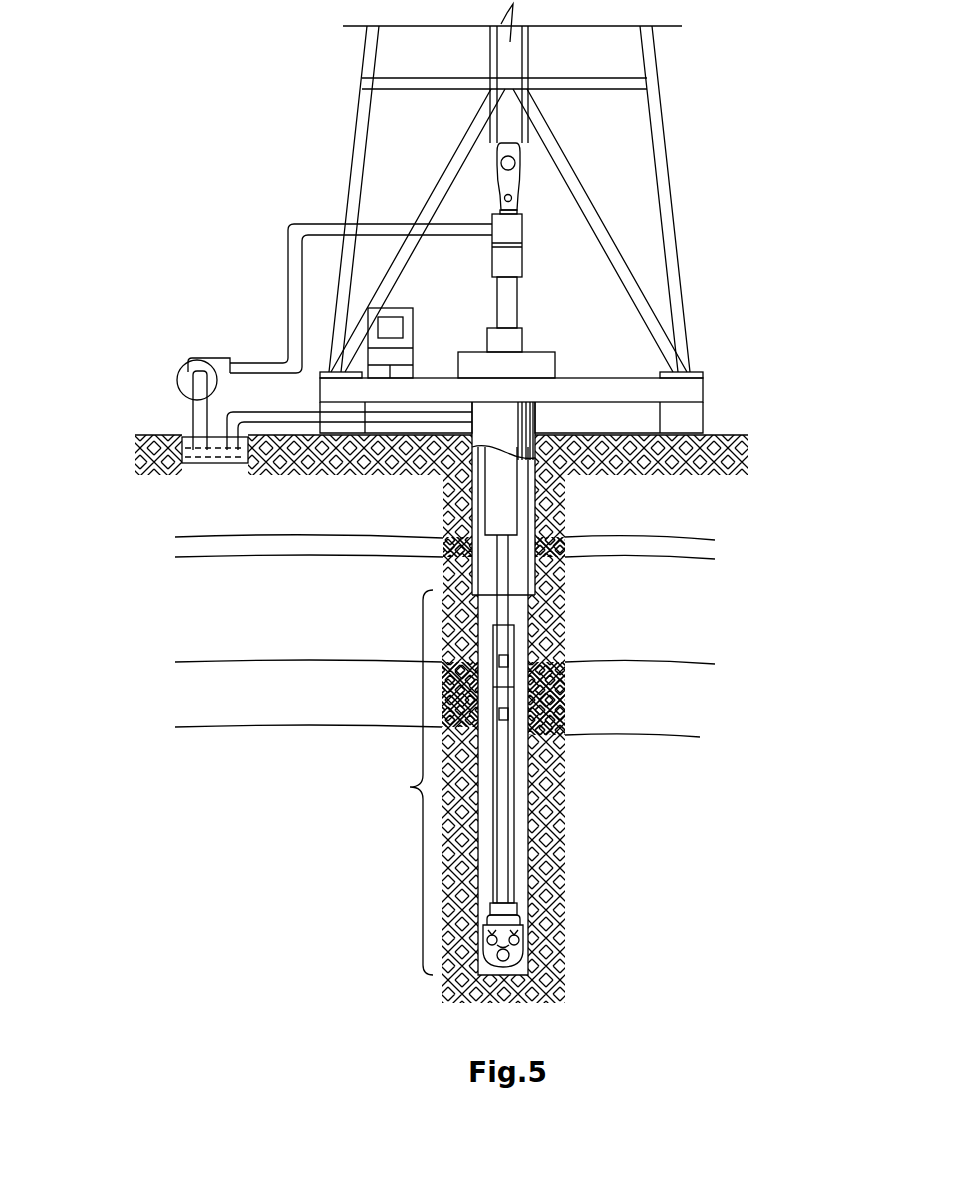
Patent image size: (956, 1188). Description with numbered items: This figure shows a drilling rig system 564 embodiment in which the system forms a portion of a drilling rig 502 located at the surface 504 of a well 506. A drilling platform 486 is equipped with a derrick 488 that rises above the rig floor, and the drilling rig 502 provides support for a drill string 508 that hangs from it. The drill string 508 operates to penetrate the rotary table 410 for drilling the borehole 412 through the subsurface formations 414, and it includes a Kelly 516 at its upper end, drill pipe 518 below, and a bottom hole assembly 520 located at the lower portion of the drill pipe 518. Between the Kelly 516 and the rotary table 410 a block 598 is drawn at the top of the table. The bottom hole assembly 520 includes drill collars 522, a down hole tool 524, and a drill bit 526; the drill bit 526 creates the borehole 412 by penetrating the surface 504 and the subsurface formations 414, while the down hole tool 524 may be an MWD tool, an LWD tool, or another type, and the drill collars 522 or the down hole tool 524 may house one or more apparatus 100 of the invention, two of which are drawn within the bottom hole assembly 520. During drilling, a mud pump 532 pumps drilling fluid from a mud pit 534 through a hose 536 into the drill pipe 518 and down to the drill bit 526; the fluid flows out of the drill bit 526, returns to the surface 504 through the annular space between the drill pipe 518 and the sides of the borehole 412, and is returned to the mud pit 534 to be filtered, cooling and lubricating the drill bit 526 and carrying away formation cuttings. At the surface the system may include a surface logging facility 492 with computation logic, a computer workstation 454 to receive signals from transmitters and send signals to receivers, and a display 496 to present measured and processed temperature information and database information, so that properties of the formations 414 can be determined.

The drilling rig system 564 is at (280, 137).
The derrick 488 is at (663, 99).
The drilling rig 502 is at (676, 166).
The hose 536 is at (290, 270).
The mud pump 532 is at (207, 355).
The mud pit 534 is at (212, 468).
The surface logging facility 492 is at (409, 298).
The computer workstation 454 is at (414, 319).
The display 496 is at (404, 329).
The Kelly 516 is at (518, 297).
The rotary table 598 is at (523, 338).
The rotary table 410 is at (557, 362).
The drilling platform 486 is at (708, 390).
The surface 504 is at (735, 432).
The well 506 is at (548, 427).
The drill collars 522 is at (518, 524).
The drill pipe 518 is at (503, 592).
The subsurface formations 414 is at (150, 537).
The apparatus 100 is at (508, 660).
The bottom hole assembly 520 is at (397, 782).
The drill string 508 is at (518, 786).
The borehole 412 is at (530, 853).
The down hole tool 524 is at (507, 890).
The drill bit 526 is at (518, 928).